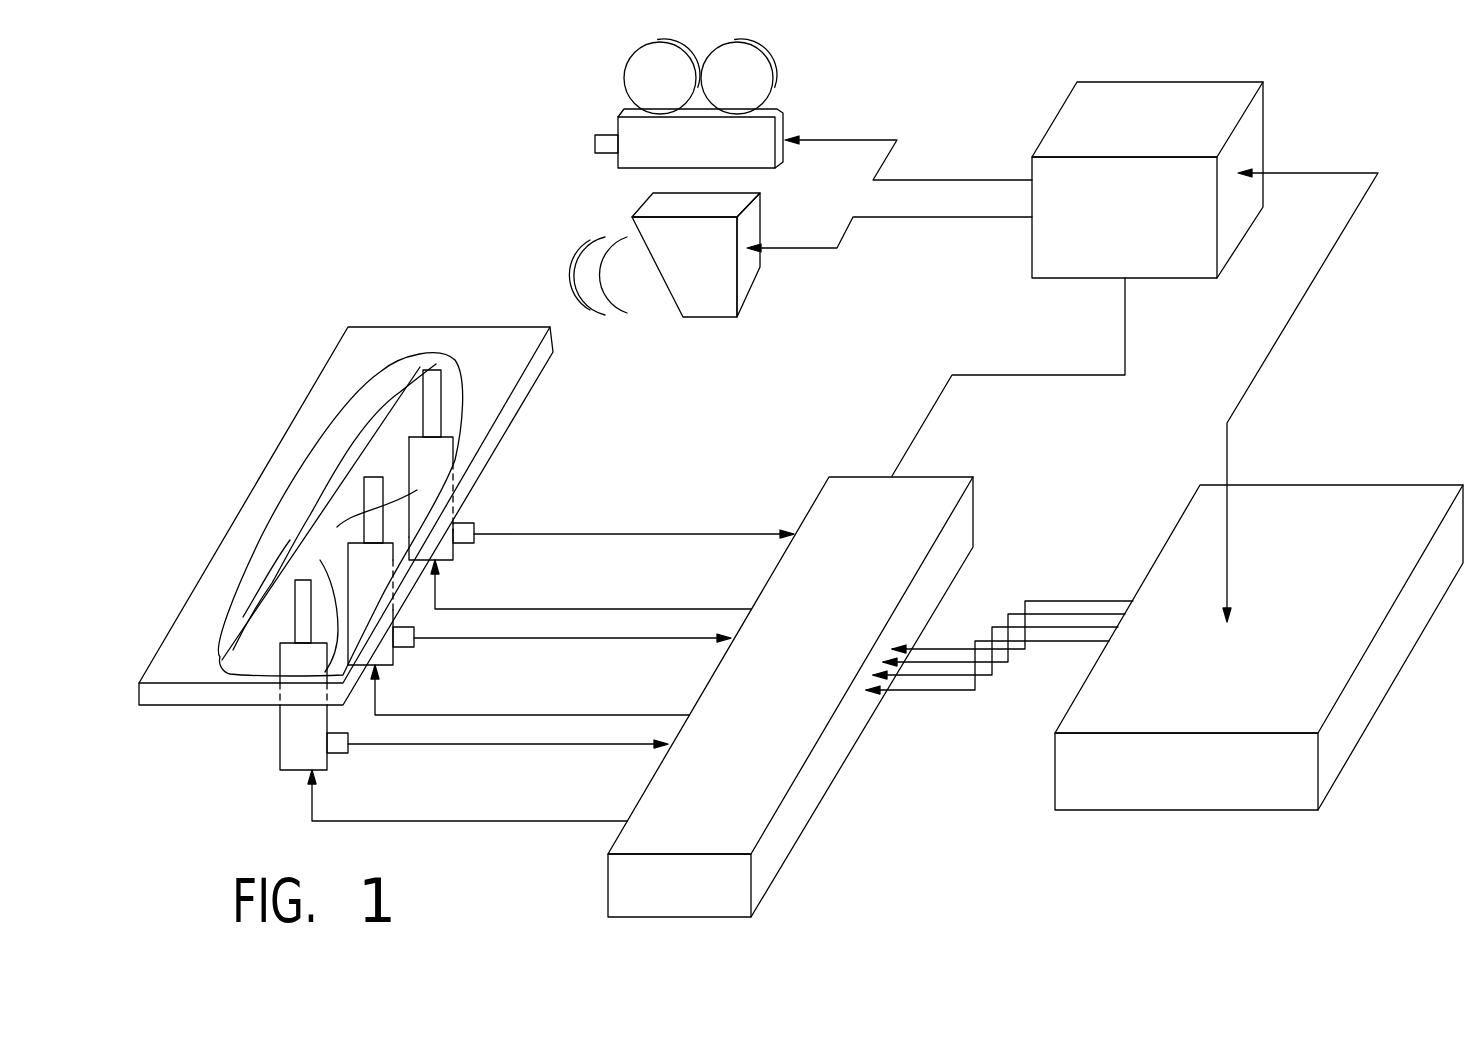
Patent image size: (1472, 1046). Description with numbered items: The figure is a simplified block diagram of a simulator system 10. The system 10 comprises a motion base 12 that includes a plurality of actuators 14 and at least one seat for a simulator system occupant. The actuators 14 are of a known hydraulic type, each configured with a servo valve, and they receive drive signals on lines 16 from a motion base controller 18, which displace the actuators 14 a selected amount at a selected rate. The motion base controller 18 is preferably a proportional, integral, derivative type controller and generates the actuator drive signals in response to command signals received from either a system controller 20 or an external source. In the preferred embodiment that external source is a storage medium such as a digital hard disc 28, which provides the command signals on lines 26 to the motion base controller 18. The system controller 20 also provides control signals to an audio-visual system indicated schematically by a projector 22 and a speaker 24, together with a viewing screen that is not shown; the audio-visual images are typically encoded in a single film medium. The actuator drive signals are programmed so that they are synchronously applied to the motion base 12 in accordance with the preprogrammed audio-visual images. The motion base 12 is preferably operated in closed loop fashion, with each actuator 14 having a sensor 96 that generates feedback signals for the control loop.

The simulator system 10 is at (420, 192).
The motion base 12 is at (313, 437).
The actuators 14 is at (350, 585).
The lines 16 is at (636, 609).
The motion base controller 18 is at (734, 840).
The system controller 20 is at (1187, 100).
The projector 22 is at (757, 80).
The speaker 24 is at (705, 297).
The lines 26 is at (1090, 560).
The digital hard disc 28 is at (1340, 507).
The sensor 96 is at (463, 543).